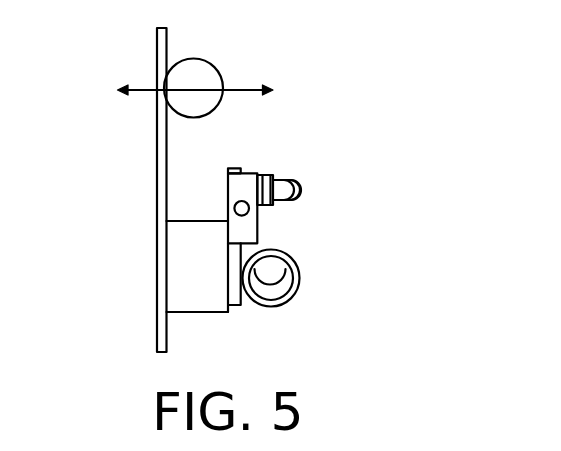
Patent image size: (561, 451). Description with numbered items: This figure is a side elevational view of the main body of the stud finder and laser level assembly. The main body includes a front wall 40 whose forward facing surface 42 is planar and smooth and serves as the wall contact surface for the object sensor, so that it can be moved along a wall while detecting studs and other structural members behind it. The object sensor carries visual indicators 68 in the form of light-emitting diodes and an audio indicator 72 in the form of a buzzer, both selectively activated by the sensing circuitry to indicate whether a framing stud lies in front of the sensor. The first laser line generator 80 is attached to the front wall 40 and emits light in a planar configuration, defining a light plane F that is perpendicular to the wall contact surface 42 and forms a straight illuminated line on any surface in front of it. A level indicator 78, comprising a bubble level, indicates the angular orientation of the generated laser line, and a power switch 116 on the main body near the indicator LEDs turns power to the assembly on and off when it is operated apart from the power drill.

The light plane F is at (143, 89).
The front wall 40 is at (162, 246).
The forward facing surface 42 is at (156, 145).
The visual indicator 68 is at (300, 181).
The audio indicator 72 is at (202, 305).
The level indicator 78 is at (290, 293).
The first laser line generator 80 is at (214, 67).
The power switch 116 is at (247, 212).